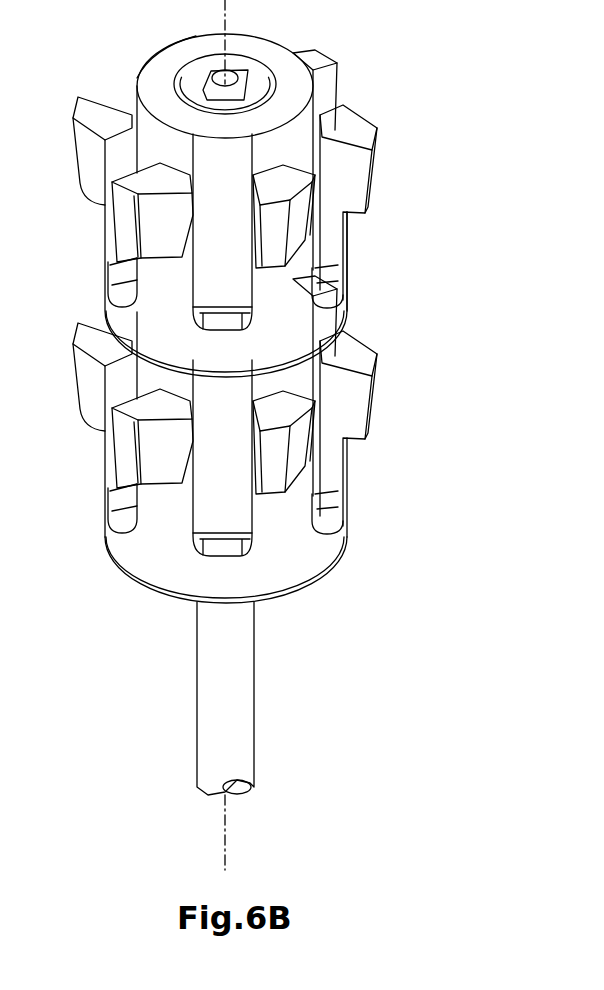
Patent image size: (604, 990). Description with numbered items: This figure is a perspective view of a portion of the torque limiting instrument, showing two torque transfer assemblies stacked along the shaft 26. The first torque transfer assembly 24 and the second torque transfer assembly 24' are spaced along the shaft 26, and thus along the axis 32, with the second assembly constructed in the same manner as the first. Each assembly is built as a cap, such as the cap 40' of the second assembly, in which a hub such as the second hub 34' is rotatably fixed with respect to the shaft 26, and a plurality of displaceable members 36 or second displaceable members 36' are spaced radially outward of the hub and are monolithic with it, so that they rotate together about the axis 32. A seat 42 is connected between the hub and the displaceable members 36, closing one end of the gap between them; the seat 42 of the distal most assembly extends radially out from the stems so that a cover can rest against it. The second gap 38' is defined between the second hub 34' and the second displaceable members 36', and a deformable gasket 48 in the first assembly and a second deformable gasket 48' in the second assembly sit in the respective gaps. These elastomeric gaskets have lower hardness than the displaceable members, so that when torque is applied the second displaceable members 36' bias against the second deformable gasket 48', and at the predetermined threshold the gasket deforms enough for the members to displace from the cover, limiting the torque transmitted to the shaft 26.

The torque transfer assembly 24 is at (220, 471).
The second torque transfer assembly 24' is at (224, 204).
The shaft 26 is at (235, 690).
The axis 32 is at (225, 843).
The second hub 34' is at (300, 84).
The displaceable members 36 is at (375, 428).
The second displaceable members 36' is at (379, 202).
The second gap 38' is at (187, 151).
The second cap 40' is at (389, 261).
The seat 42 is at (178, 603).
The deformable gasket 48 is at (270, 503).
The second deformable gasket 48' is at (137, 232).